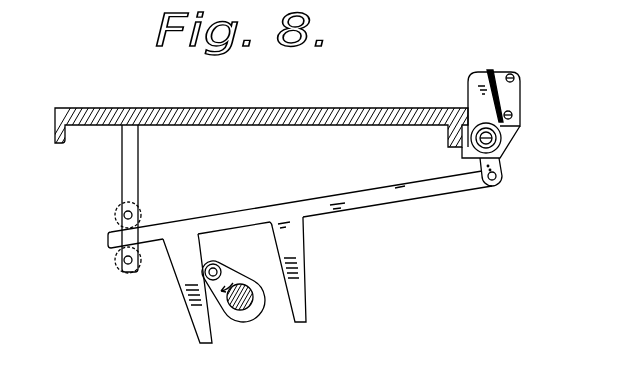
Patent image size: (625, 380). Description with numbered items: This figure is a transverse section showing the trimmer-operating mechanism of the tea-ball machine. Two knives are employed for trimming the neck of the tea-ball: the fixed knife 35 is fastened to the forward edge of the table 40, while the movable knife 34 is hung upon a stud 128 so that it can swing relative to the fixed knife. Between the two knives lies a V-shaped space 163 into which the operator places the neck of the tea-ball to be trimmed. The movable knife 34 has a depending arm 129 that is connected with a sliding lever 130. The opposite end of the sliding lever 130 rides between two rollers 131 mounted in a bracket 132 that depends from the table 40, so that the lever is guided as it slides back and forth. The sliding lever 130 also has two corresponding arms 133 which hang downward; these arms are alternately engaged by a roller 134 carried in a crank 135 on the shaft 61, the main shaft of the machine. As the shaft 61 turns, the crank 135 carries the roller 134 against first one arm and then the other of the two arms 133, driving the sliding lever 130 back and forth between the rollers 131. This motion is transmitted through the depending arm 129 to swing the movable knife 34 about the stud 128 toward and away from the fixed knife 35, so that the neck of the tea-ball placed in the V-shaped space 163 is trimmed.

The table 40 is at (287, 100).
The movable knife 34 is at (470, 88).
The fixed knife 35 is at (511, 96).
The V-shaped space 163 is at (495, 84).
The stud 128 is at (489, 138).
The depending arm 129 is at (503, 166).
The sliding lever 130 is at (363, 183).
The rollers 131 is at (140, 215).
The bracket 132 is at (130, 178).
The arms 133 is at (199, 322).
The roller 134 is at (220, 265).
The crank 135 is at (247, 281).
The shaft 61 is at (257, 312).